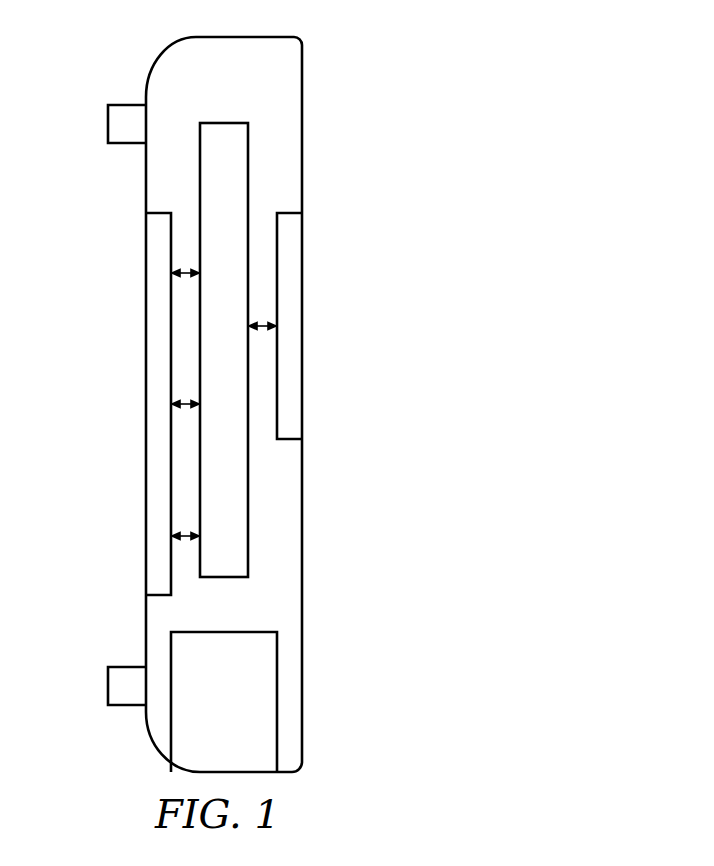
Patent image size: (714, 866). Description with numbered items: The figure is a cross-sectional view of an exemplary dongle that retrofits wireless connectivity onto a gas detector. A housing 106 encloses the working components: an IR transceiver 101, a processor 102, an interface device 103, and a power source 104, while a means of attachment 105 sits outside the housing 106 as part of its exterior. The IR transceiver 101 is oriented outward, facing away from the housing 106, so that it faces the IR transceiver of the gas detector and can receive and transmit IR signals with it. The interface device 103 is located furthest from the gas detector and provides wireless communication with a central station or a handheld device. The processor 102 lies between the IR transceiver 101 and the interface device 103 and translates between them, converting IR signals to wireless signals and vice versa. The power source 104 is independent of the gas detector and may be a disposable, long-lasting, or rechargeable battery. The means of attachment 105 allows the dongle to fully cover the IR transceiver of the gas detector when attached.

The IR transceiver 101 is at (158, 375).
The processor 102 is at (223, 483).
The interface device 103 is at (290, 288).
The power source 104 is at (240, 696).
The means of attachment 105 is at (121, 143).
The housing 106 is at (297, 38).